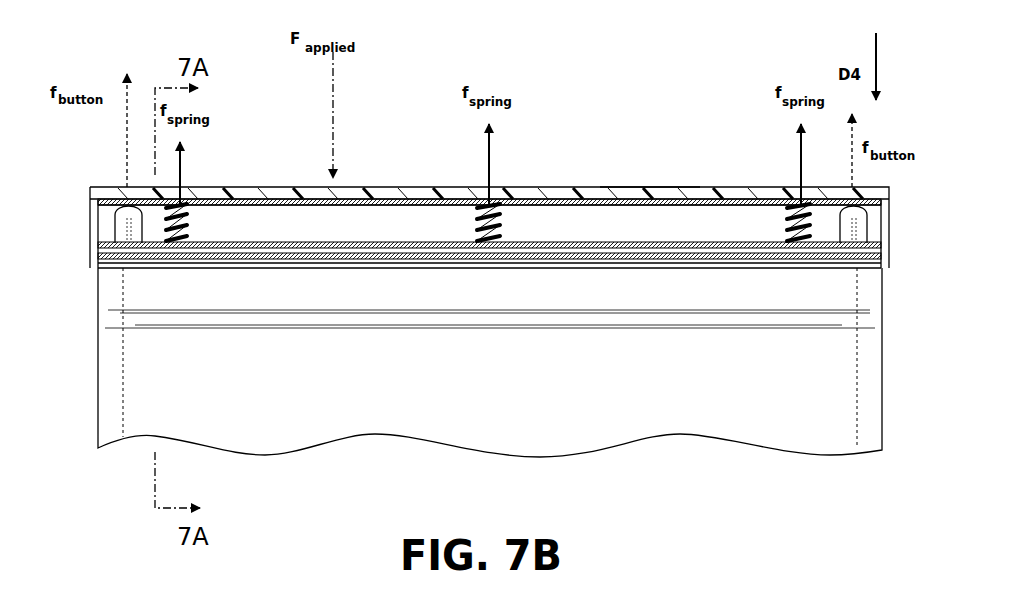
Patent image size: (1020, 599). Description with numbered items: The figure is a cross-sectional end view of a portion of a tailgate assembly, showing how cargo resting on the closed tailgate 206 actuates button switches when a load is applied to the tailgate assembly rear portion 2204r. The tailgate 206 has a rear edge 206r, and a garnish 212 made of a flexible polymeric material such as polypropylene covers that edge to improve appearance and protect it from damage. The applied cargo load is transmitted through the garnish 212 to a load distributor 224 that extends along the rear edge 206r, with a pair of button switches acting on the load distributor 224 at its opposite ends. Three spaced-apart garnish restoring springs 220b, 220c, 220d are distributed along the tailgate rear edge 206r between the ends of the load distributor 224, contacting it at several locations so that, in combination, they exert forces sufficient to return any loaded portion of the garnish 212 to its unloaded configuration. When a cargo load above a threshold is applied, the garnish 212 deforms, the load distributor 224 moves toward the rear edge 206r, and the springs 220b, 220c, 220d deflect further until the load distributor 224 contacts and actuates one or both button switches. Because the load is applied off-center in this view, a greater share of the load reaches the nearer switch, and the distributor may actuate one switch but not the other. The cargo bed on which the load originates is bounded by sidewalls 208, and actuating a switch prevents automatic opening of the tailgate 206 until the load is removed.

The garnish 212 is at (258, 187).
The load distributor 224 is at (558, 198).
The top plate region 2204r is at (617, 178).
The tailgate rear edge 206r is at (302, 246).
The tailgate 206 is at (375, 436).
The sidewalls 208 is at (98, 347).
The spring 220b is at (178, 245).
The spring 220c is at (486, 243).
The spring 220d is at (800, 243).